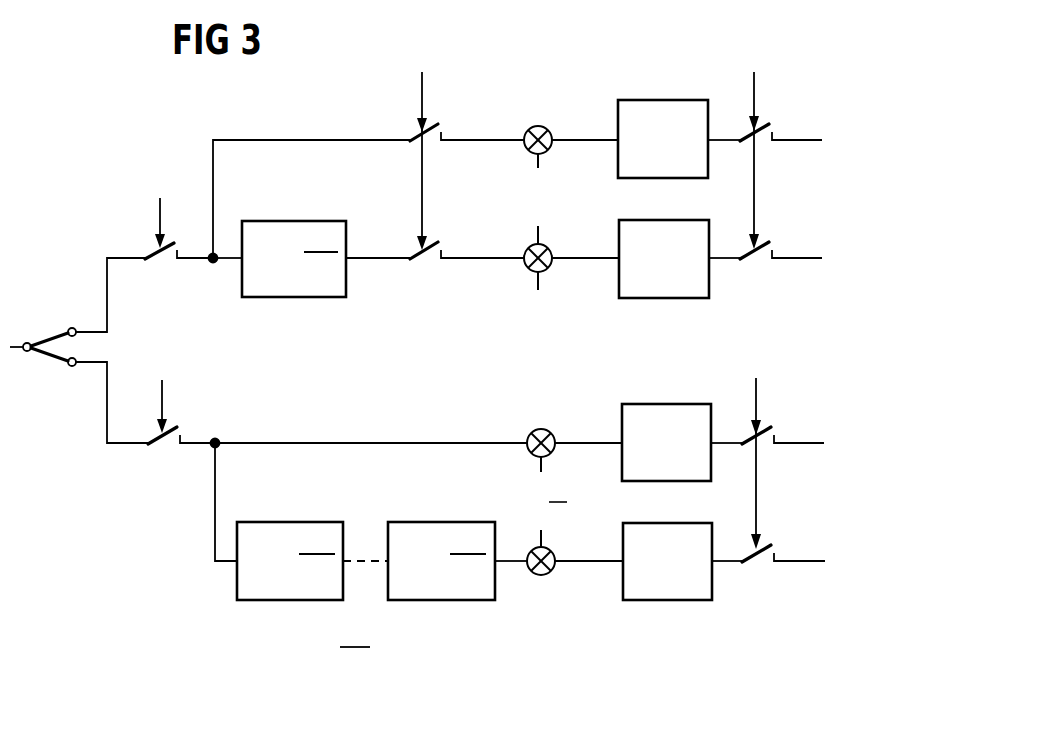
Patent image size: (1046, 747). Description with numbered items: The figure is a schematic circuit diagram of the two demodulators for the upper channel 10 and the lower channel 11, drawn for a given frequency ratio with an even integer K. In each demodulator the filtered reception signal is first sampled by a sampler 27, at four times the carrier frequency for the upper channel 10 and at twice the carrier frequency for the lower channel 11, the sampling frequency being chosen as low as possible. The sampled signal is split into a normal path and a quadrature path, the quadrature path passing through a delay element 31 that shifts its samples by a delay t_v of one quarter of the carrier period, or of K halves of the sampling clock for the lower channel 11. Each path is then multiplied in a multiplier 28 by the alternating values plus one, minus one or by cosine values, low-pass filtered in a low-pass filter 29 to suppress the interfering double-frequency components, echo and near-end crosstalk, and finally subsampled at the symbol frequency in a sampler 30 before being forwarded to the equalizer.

The upper channel 10 is at (827, 204).
The lower channel 11 is at (832, 513).
The sampler 27 is at (165, 265).
The multiplier 28 is at (538, 290).
The low-pass filter 29 is at (664, 99).
The sampler 30 is at (766, 132).
The delay element 31 is at (296, 300).